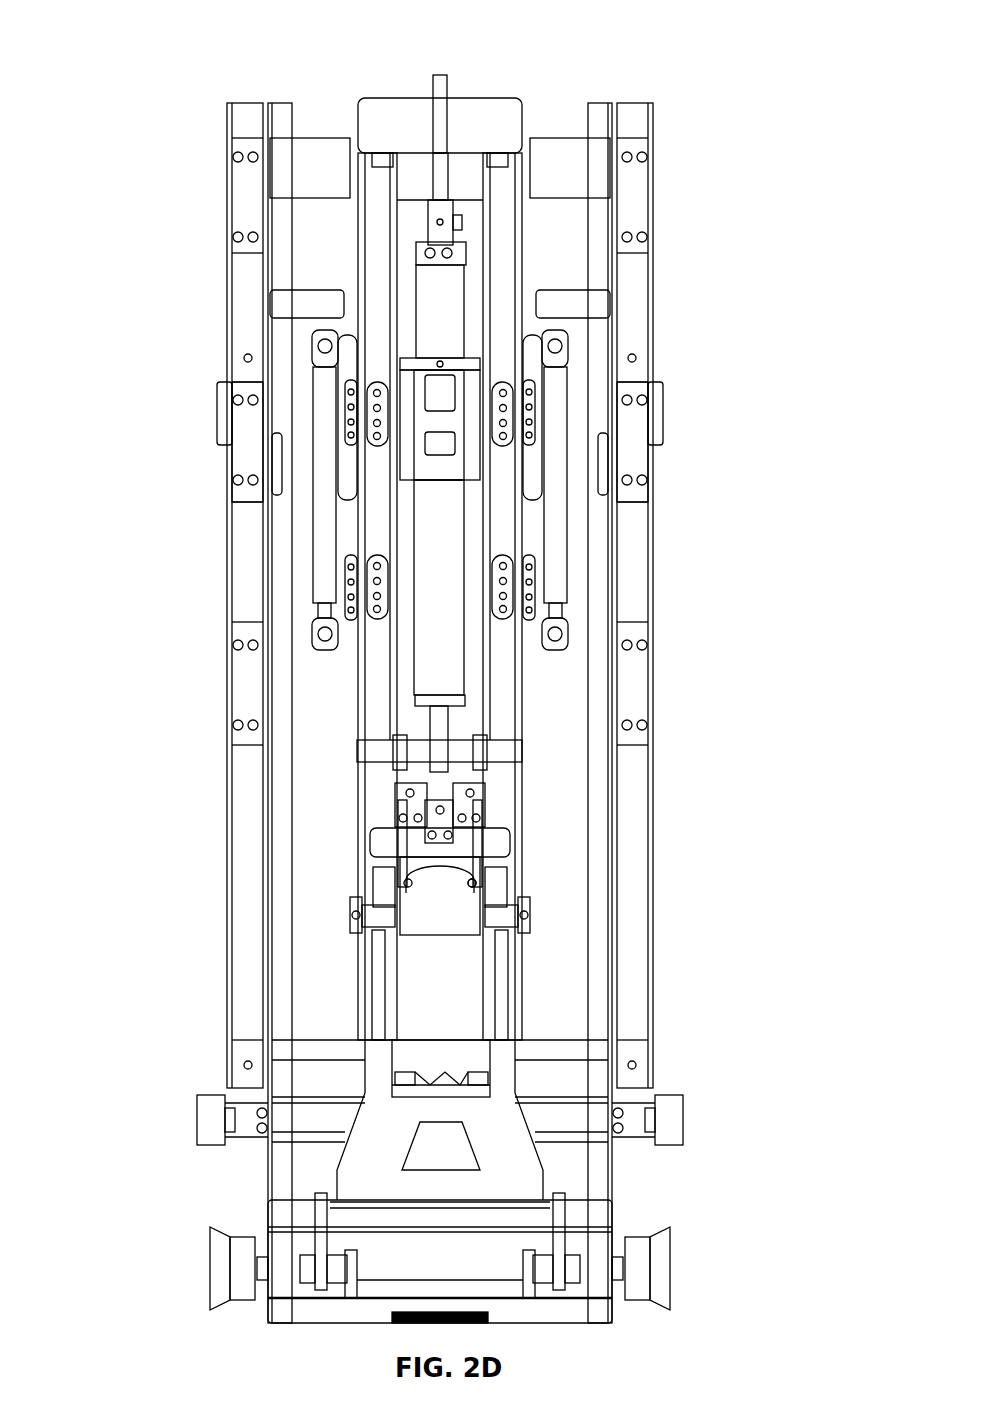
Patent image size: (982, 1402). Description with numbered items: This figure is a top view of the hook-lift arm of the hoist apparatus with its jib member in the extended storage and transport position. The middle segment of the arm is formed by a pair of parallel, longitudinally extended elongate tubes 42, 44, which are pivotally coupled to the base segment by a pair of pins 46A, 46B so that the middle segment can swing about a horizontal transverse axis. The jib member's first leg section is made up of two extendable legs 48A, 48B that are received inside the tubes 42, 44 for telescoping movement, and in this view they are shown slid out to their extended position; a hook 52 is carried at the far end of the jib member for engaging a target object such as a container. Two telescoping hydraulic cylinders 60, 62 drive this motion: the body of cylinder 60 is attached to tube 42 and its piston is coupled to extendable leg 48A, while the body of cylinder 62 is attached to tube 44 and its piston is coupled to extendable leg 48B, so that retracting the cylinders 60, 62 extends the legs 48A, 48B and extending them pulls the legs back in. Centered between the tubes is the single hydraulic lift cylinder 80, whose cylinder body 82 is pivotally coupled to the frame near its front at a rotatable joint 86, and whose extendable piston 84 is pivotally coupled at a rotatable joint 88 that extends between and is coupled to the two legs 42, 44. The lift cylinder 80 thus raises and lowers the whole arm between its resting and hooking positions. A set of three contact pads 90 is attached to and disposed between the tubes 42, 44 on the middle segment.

The elongate tube 42 is at (378, 518).
The elongate tube 44 is at (495, 520).
The pin 46A is at (355, 908).
The pin 46B is at (526, 908).
The extendable leg 48A is at (378, 265).
The extendable leg 48B is at (500, 262).
The hook 52 is at (437, 100).
The hydraulic cylinder 60 is at (325, 568).
The hydraulic cylinder 62 is at (556, 570).
The hydraulic lift cylinder 80 is at (440, 630).
The cylinder body 82 is at (460, 660).
The extendable piston 84 is at (438, 720).
The rotatable joint 86 is at (437, 220).
The rotatable joint 88 is at (460, 750).
The contact pad 90 is at (385, 805).